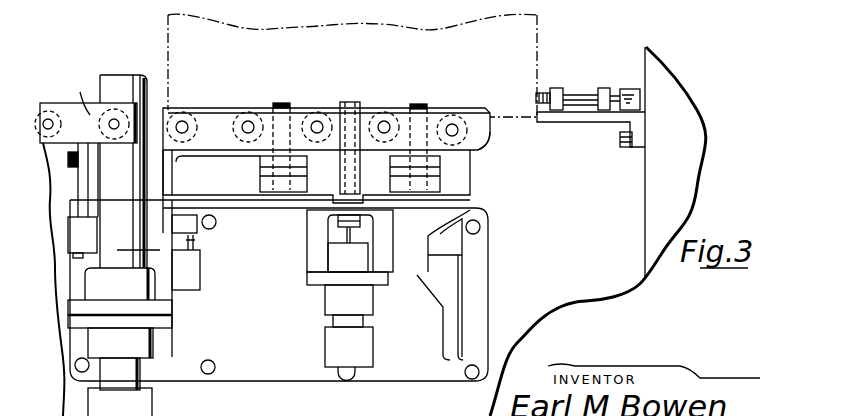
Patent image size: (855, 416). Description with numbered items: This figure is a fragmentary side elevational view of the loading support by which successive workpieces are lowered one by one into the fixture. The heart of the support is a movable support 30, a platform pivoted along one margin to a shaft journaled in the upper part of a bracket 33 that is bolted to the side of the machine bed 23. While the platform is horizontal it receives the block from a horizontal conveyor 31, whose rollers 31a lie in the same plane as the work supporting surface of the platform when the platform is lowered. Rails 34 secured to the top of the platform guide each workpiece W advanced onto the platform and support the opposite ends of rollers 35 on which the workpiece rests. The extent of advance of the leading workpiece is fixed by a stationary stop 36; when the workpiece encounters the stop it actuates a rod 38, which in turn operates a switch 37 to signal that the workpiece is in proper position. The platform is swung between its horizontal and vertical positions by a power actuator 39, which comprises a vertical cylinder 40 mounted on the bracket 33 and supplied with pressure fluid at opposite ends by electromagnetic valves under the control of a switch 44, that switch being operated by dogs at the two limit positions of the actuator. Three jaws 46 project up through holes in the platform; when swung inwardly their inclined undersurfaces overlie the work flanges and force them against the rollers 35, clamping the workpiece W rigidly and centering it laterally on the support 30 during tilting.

The workpiece W is at (538, 52).
The machine bed 23 is at (565, 310).
The movable support 30 is at (456, 98).
The horizontal conveyor 31 is at (60, 103).
The rollers 31a is at (79, 94).
The bracket 33 is at (478, 257).
The rails 34 is at (478, 140).
The rollers 35 is at (246, 110).
The stationary stop 36 is at (540, 113).
The switch 37 is at (624, 90).
The rod 38 is at (583, 94).
The power actuator 39 is at (178, 314).
The vertical cylinder 40 is at (143, 402).
The switch 44 is at (82, 240).
The jaws 46 is at (418, 104).